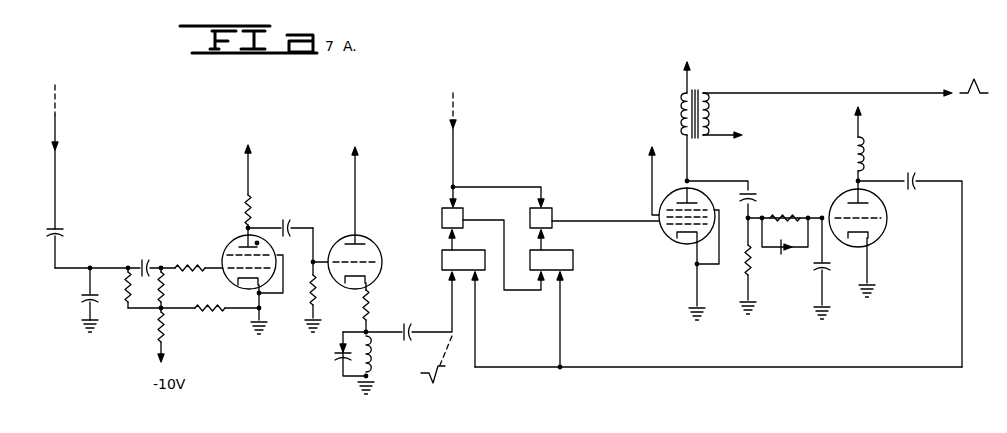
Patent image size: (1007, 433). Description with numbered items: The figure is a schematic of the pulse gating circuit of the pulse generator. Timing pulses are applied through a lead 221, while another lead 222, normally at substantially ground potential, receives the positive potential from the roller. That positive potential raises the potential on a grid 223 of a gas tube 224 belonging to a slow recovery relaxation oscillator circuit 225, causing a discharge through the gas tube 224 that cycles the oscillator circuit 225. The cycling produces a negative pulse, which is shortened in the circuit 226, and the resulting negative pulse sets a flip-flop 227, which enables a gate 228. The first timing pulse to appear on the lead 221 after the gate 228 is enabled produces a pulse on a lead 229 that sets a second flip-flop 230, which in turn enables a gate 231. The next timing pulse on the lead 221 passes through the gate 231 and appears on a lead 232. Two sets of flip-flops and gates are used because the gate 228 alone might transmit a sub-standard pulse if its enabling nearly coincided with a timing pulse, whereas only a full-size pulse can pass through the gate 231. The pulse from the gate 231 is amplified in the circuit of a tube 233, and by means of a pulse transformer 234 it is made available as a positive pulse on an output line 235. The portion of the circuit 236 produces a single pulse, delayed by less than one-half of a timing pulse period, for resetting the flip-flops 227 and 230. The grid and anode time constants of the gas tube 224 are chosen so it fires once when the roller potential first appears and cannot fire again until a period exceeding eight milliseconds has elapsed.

The lead 221 is at (456, 163).
The lead 222 is at (59, 170).
The grid 223 is at (222, 268).
The gas tube 224 is at (240, 233).
The slow recovery relaxation oscillator circuit 225 is at (271, 219).
The pulse shortening circuit 226 is at (376, 228).
The flip-flop 227 is at (442, 268).
The gate 228 is at (465, 213).
The lead 229 is at (520, 290).
The flip-flop 230 is at (575, 262).
The gate 231 is at (554, 212).
The lead 232 is at (591, 222).
The tube 233 is at (672, 245).
The pulse transformer 234 is at (680, 108).
The output line 235 is at (840, 93).
The reset pulse circuit 236 is at (955, 167).